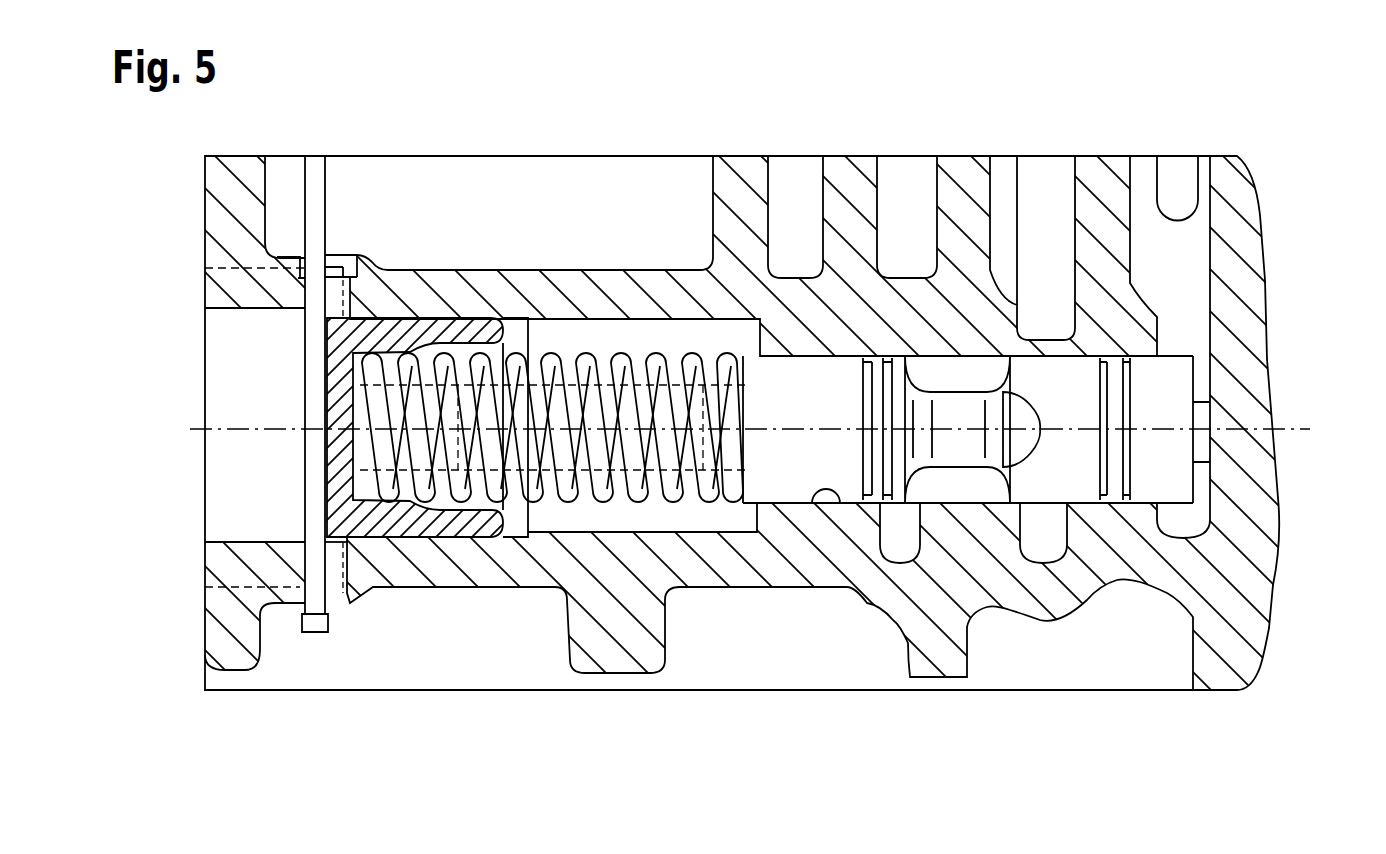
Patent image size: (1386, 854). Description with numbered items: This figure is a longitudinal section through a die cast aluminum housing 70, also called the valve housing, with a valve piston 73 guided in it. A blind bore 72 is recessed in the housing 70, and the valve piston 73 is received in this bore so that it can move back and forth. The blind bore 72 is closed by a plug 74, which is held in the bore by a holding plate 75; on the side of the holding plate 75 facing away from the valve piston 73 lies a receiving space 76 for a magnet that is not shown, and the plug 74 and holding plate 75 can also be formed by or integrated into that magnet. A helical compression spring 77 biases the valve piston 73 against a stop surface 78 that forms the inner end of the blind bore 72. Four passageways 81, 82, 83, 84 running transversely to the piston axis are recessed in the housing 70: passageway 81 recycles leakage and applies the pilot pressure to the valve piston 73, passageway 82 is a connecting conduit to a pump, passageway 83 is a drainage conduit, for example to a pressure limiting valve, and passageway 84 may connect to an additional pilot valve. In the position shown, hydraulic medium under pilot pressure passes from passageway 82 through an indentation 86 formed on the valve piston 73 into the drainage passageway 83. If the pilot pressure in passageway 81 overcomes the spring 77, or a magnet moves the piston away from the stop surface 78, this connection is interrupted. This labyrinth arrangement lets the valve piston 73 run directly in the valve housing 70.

The die cast aluminum housing 70 is at (1112, 208).
The blind bore 72 is at (838, 503).
The valve piston 73 is at (817, 383).
The plug 74 is at (427, 347).
The holding plate 75 is at (318, 341).
The receiving space 76 is at (258, 460).
The helical compression spring 77 is at (547, 503).
The stop surface 78 is at (1207, 330).
The passageway 81 is at (1193, 238).
The passageway 82 is at (1044, 212).
The passageway 83 is at (904, 210).
The passageway 84 is at (797, 210).
The indentation 86 is at (1018, 450).